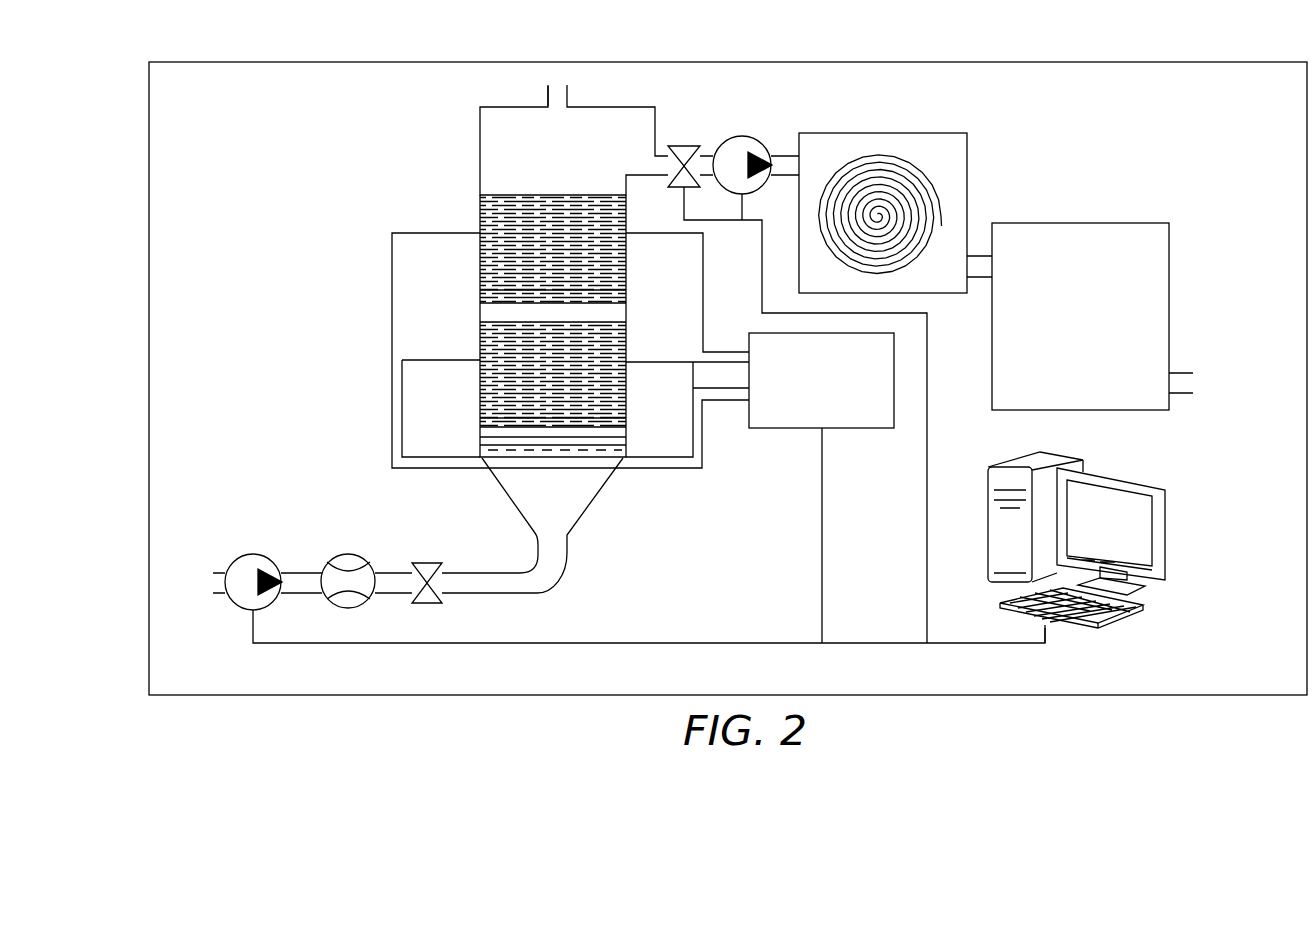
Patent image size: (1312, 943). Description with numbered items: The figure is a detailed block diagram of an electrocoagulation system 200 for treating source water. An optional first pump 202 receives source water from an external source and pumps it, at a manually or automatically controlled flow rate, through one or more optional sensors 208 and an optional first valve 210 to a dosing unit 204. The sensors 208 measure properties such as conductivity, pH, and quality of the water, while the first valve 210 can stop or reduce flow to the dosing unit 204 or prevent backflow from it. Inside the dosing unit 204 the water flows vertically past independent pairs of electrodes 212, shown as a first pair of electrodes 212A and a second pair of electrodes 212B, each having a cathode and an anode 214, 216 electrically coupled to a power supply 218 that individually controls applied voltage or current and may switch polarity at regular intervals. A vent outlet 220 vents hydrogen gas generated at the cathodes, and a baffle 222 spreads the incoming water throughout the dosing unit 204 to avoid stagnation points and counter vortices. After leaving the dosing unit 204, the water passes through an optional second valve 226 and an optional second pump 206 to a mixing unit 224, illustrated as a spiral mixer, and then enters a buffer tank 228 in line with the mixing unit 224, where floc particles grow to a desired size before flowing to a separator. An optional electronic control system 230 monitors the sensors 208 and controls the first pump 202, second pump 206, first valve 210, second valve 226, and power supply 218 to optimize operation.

The electrocoagulation (EC) system 200 is at (343, 34).
The first pump 202 is at (242, 611).
The dosing unit 204 is at (478, 128).
The second pump 206 is at (743, 137).
The sensors 208 is at (340, 555).
The first valve 210 is at (436, 604).
The independent pairs of electrodes 212 is at (384, 176).
The first pair of electrodes 212A is at (480, 212).
The second pair of electrodes 212B is at (480, 418).
The anode 214 is at (480, 292).
The anode 216 is at (480, 342).
The power supply 218 is at (793, 430).
The vent outlet 220 is at (547, 94).
The baffle 222 is at (595, 448).
The mixing unit 224 is at (968, 170).
The second valve 226 is at (682, 145).
The buffer tank 228 is at (1073, 223).
The control system 230 is at (1140, 480).